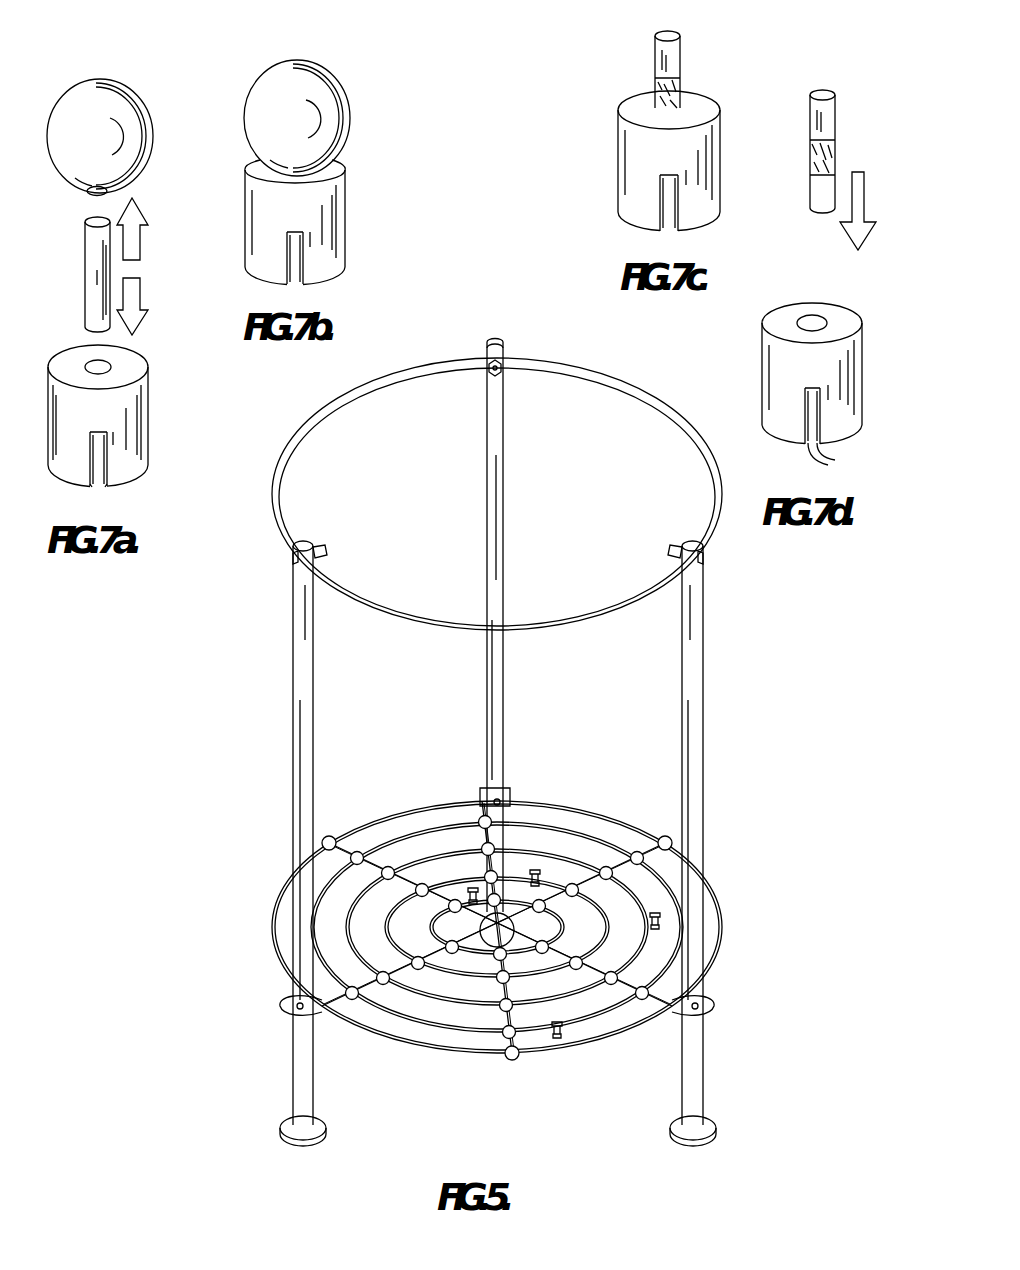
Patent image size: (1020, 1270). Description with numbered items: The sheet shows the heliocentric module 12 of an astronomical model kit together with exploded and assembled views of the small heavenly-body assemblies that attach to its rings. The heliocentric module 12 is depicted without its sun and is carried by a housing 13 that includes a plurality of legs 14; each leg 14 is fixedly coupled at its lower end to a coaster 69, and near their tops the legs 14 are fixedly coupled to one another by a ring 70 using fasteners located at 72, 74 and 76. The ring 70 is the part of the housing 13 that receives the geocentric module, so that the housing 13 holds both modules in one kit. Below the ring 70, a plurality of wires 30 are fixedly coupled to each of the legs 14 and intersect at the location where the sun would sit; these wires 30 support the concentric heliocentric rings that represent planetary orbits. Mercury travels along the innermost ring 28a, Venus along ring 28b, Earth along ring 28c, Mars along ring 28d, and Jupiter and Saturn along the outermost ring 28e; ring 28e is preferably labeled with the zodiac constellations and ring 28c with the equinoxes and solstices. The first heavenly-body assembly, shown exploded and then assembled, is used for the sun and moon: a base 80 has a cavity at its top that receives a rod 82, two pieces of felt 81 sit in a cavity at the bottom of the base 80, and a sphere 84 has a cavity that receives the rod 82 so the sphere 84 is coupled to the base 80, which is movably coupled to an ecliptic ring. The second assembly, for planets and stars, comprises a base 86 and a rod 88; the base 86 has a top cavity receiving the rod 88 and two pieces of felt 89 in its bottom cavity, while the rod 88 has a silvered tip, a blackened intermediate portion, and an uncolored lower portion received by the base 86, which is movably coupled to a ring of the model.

In FIG. 5, the heliocentric module 12 is at (564, 788).
In FIG. 5, the housing 13 is at (640, 378).
In FIG. 5, the legs 14 is at (292, 689).
In FIG. 5, the ring 28a is at (570, 895).
In FIG. 5, the ring 28b is at (622, 895).
In FIG. 5, the ring 28c is at (533, 850).
In FIG. 5, the ring 28d is at (594, 836).
In FIG. 5, the ring 28e is at (643, 829).
In FIG. 5, the wires 30 is at (480, 792).
In FIG. 5, the coaster 69 is at (702, 1140).
In FIG. 5, the ring 70 is at (438, 350).
In FIG. 5, the fastener 72 is at (482, 369).
In FIG. 5, the fastener 74 is at (682, 545).
In FIG. 5, the fastener 76 is at (311, 545).
In FIG. 7A, the base 80 is at (151, 405).
In FIG. 7B, the base 80 is at (348, 232).
In FIG. 7A, the pieces of felt 81 is at (108, 484).
In FIG. 7A, the rod 82 is at (93, 272).
In FIG. 7A, the sphere 84 is at (125, 104).
In FIG. 7B, the sphere 84 is at (353, 112).
In FIG. 7C, the base 86 is at (722, 146).
In FIG. 7D, the base 86 is at (865, 360).
In FIG. 7C, the rod 88 is at (682, 92).
In FIG. 7D, the pieces of felt 89 is at (835, 462).